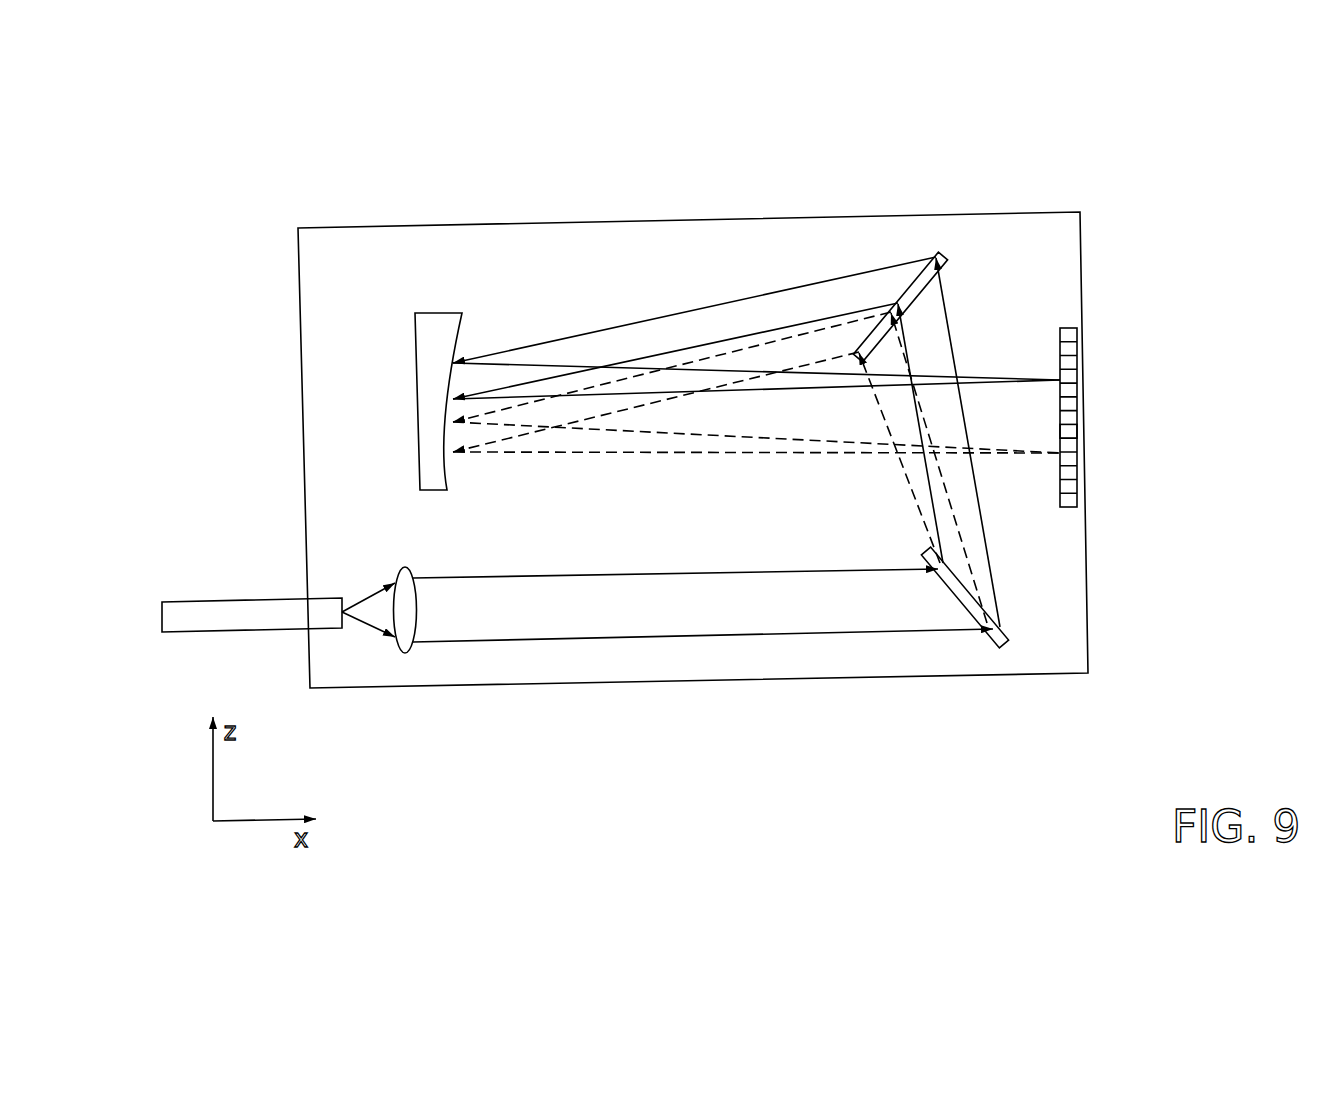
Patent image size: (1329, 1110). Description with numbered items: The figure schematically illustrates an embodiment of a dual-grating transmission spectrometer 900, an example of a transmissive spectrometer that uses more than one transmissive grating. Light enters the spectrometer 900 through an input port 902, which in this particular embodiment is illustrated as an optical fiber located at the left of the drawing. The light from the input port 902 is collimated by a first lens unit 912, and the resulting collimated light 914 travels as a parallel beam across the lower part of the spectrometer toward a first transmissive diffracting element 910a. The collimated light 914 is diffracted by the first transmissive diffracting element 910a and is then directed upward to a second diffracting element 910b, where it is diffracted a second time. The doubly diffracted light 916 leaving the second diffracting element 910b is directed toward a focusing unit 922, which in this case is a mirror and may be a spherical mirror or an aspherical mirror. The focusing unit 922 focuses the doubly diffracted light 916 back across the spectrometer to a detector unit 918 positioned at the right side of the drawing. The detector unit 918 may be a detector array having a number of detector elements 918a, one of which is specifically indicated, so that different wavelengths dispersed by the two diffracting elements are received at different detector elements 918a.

The spectrometer 900 is at (1163, 133).
The input port 902 is at (232, 598).
The first transmissive diffracting element 910a is at (997, 647).
The second diffracting element 910b is at (937, 250).
The first lens unit 912 is at (407, 653).
The collimated light 914 is at (718, 637).
The doubly diffracted light 916 is at (593, 330).
The detector unit 918 is at (1073, 375).
The detector elements 918a is at (1077, 427).
The focusing unit 922 is at (415, 345).